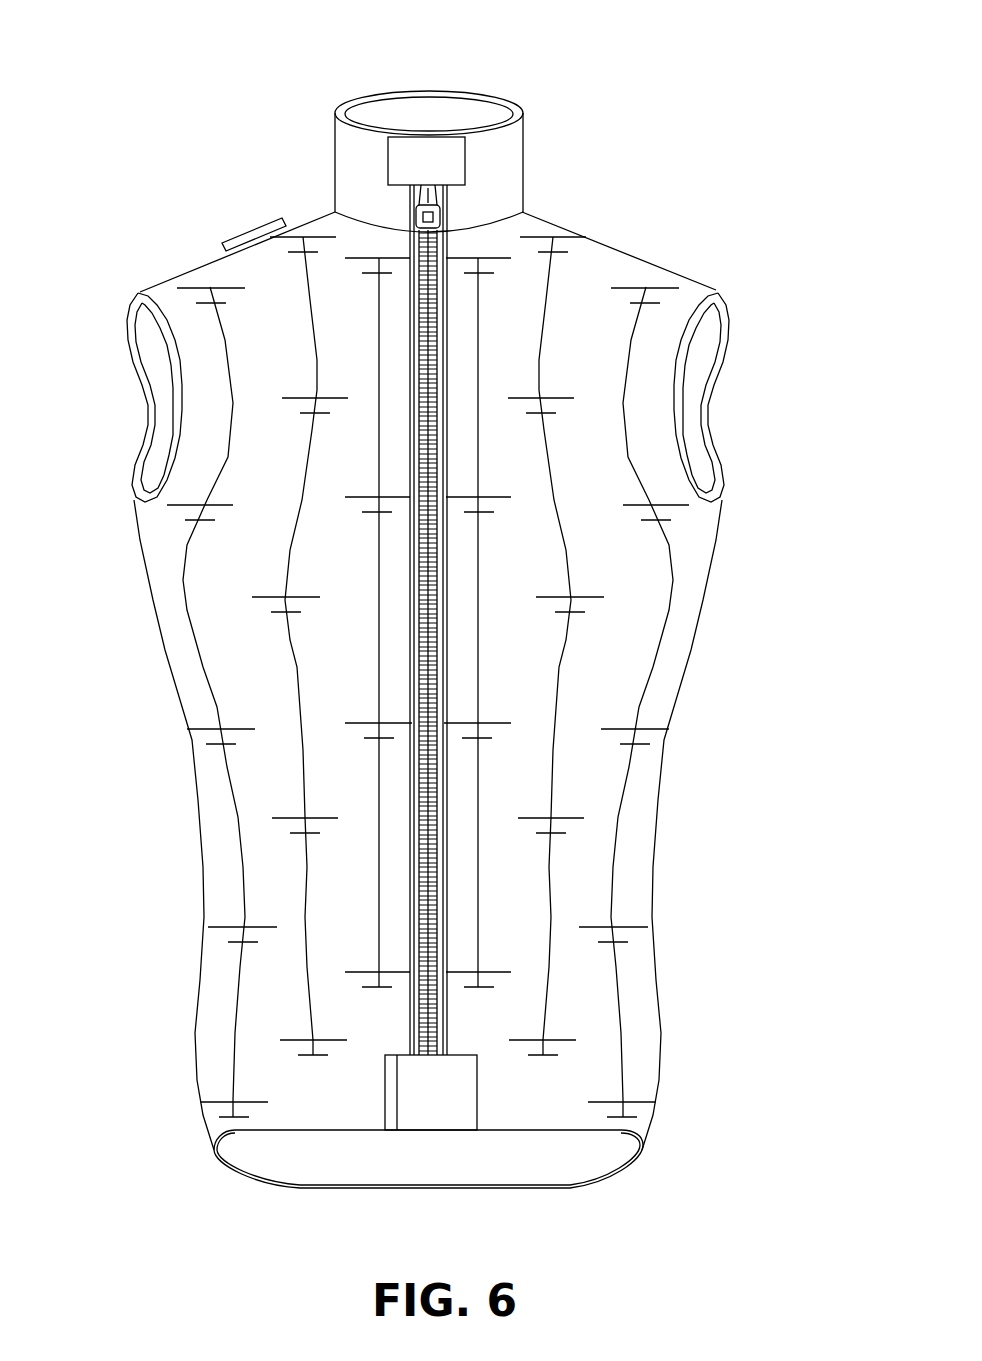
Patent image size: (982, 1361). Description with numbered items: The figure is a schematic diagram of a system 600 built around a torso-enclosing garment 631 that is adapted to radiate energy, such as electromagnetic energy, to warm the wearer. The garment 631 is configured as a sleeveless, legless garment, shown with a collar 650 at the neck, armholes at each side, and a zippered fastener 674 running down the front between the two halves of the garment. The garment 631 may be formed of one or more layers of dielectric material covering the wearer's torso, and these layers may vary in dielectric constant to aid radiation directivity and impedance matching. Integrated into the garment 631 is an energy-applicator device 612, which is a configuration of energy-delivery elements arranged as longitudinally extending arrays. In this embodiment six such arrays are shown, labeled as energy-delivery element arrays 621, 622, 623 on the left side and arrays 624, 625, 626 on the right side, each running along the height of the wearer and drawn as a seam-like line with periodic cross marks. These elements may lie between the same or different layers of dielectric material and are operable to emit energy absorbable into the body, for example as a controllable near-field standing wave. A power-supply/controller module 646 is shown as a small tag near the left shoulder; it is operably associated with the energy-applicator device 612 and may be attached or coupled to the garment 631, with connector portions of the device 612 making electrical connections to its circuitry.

The system 600 is at (700, 46).
The collar 650 is at (447, 112).
The energy-delivery element array 623 is at (360, 252).
The energy-delivery element array 624 is at (497, 252).
The power-supply/controller module 646 is at (252, 230).
The energy-delivery element array 622 is at (302, 328).
The energy-delivery element array 621 is at (213, 340).
The right middle panel seam 625 is at (552, 308).
The energy-applicator device 612 is at (668, 267).
The right outer panel seam 626 is at (645, 340).
The torso-enclosing garment 631 is at (195, 787).
The zippered fastener 674 is at (430, 1062).